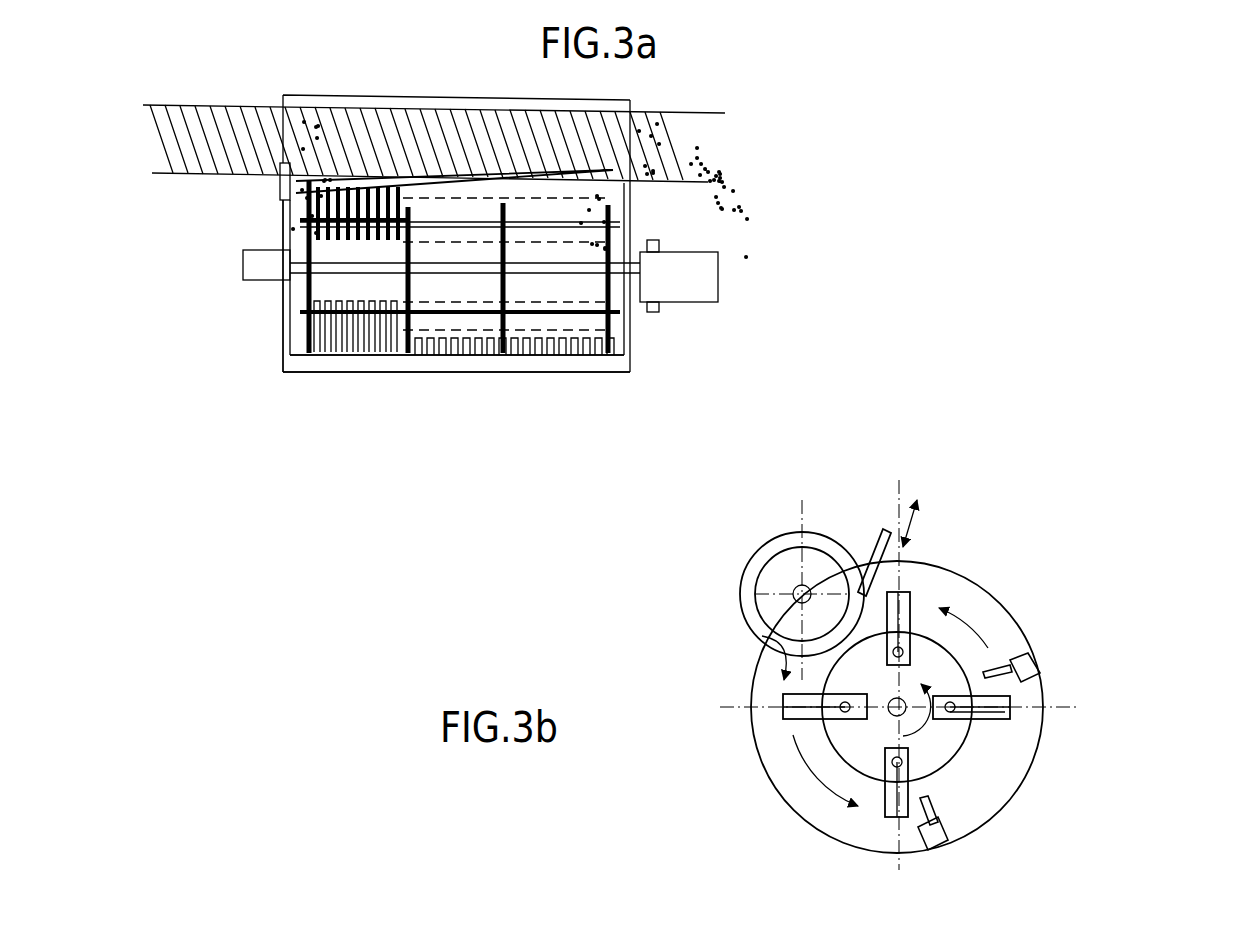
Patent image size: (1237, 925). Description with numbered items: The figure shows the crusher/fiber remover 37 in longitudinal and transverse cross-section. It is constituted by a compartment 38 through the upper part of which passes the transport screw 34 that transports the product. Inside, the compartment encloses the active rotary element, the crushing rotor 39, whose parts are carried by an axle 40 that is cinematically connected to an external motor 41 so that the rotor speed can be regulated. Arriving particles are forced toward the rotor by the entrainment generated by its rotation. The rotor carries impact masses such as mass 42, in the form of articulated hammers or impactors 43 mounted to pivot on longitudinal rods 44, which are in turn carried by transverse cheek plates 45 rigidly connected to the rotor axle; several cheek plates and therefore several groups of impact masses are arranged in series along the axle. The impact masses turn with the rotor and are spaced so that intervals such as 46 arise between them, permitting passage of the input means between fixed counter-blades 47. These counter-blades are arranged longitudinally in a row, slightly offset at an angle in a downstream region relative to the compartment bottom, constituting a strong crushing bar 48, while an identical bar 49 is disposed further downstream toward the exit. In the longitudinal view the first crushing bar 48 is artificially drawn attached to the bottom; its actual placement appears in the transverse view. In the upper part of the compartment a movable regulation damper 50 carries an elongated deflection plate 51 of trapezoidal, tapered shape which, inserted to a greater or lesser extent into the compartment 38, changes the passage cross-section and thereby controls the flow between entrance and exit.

In FIG. 3a, the transport screw 34 is at (240, 103).
In FIG. 3b, the transport screw 34 is at (823, 528).
In FIG. 3a, the crusher/fiber remover 37 is at (266, 320).
In FIG. 3a, the compartment 38 is at (630, 337).
In FIG. 3b, the compartment 38 is at (963, 555).
In FIG. 3a, the crushing rotor 39 is at (290, 334).
In FIG. 3b, the crushing rotor 39 is at (965, 765).
In FIG. 3a, the axle 40 is at (545, 268).
In FIG. 3b, the axle 40 is at (908, 680).
In FIG. 3a, the external motor 41 is at (692, 288).
In FIG. 3a, the impact mass 42 is at (288, 203).
In FIG. 3b, the impact mass 42 is at (1032, 711).
In FIG. 3a, the hammers or impactors 43 is at (350, 353).
In FIG. 3b, the hammers or impactors 43 is at (990, 718).
In FIG. 3a, the longitudinal rods 44 is at (463, 310).
In FIG. 3b, the longitudinal rods 44 is at (915, 598).
In FIG. 3a, the transverse cheek plates 45 is at (498, 283).
In FIG. 3b, the transverse cheek plates 45 is at (847, 737).
In FIG. 3a, the interval 46 is at (336, 292).
In FIG. 3a, the fixed counter-blades 47 is at (327, 355).
In FIG. 3b, the fixed counter-blades 47 is at (1036, 670).
In FIG. 3a, the crushing bar 48 is at (627, 373).
In FIG. 3b, the crushing bar 48 is at (908, 829).
In FIG. 3b, the identical bar 49 is at (1019, 641).
In FIG. 3a, the movable regulation damper 50 is at (251, 195).
In FIG. 3b, the movable regulation damper 50 is at (896, 516).
In FIG. 3a, the elongated deflection plate 51 is at (398, 185).
In FIG. 3b, the elongated deflection plate 51 is at (878, 549).